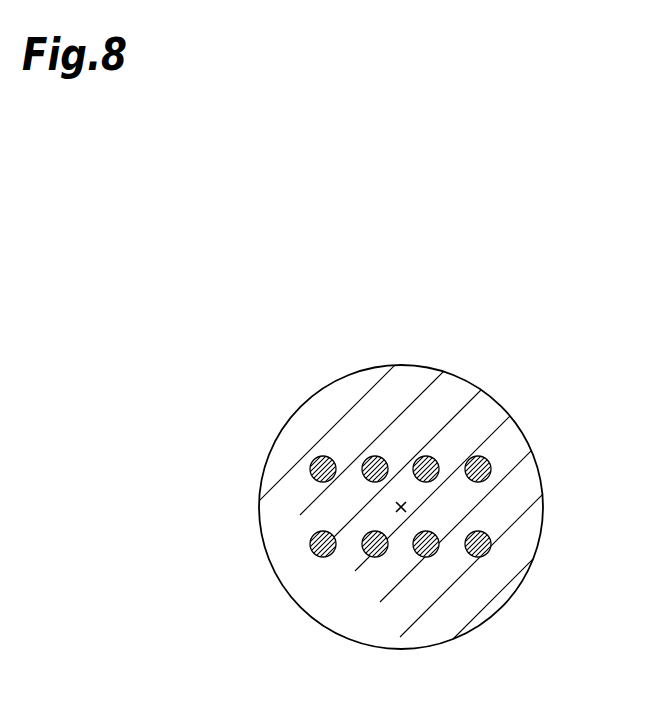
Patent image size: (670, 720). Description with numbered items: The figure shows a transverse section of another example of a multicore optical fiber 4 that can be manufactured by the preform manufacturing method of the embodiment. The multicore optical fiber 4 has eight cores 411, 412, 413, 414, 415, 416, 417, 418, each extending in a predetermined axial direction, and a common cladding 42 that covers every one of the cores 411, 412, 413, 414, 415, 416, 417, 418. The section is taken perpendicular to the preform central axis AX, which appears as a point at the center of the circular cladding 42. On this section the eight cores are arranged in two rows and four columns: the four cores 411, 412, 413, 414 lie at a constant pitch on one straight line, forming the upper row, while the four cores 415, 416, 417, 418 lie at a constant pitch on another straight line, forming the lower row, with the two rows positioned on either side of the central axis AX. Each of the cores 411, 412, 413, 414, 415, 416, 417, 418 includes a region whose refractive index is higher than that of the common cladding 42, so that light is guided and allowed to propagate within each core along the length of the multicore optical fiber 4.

The multicore optical fiber 4 is at (500, 300).
The common cladding 42 is at (530, 513).
The preform central axis AX is at (400, 508).
The core 411 is at (320, 457).
The core 412 is at (377, 456).
The core 413 is at (430, 456).
The core 414 is at (479, 456).
The core 415 is at (322, 557).
The core 416 is at (376, 557).
The core 417 is at (427, 557).
The core 418 is at (478, 557).